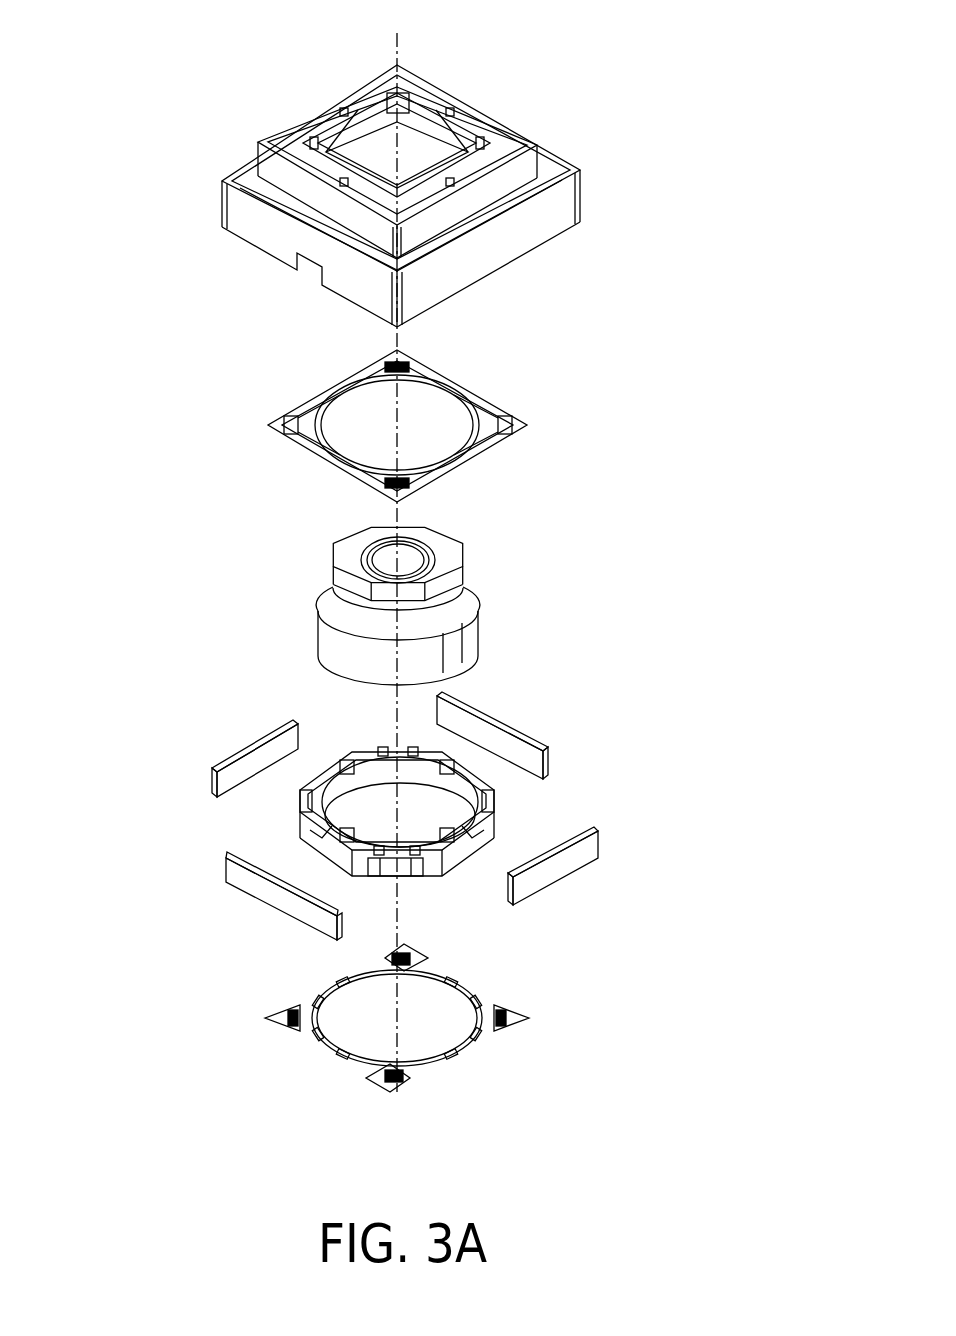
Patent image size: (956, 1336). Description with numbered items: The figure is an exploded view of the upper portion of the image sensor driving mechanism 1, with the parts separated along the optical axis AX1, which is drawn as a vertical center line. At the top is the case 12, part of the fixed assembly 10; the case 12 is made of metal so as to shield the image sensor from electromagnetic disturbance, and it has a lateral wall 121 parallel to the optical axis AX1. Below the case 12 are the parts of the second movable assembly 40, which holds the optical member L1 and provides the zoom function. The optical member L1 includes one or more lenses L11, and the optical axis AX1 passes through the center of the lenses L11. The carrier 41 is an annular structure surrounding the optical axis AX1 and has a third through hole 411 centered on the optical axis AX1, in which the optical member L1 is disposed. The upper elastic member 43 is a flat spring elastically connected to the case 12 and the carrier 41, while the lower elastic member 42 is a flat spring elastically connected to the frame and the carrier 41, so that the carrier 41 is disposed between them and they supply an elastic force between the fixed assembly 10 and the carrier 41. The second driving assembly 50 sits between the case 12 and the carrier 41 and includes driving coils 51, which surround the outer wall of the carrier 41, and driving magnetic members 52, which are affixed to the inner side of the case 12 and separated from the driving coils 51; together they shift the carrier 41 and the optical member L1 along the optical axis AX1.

The image sensor driving mechanism 1 is at (528, 82).
The fixed assembly 10 is at (343, 196).
The case 12 is at (230, 158).
The lateral wall 121 is at (262, 233).
The second movable assembly 40 is at (732, 452).
The carrier 41 is at (515, 799).
The third through hole 411 is at (380, 772).
The lower elastic member 42 is at (510, 986).
The upper elastic member 43 is at (279, 404).
The second driving assembly 50 is at (732, 568).
The driving coil 51 is at (317, 835).
The driving magnetic member 52 is at (227, 762).
The optical member L1 is at (500, 594).
The lens L11 is at (385, 562).
The optical axis AX1 is at (394, 549).